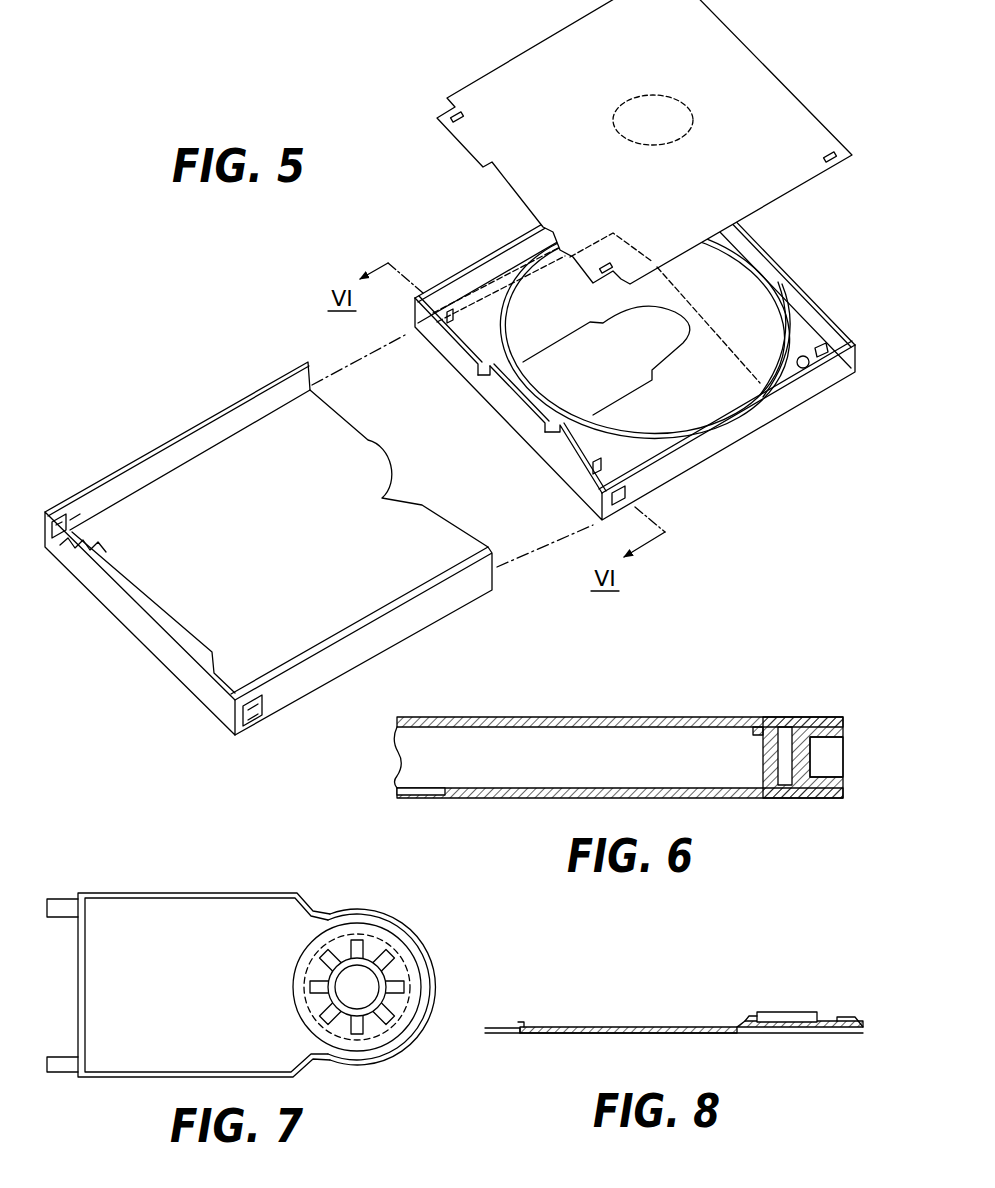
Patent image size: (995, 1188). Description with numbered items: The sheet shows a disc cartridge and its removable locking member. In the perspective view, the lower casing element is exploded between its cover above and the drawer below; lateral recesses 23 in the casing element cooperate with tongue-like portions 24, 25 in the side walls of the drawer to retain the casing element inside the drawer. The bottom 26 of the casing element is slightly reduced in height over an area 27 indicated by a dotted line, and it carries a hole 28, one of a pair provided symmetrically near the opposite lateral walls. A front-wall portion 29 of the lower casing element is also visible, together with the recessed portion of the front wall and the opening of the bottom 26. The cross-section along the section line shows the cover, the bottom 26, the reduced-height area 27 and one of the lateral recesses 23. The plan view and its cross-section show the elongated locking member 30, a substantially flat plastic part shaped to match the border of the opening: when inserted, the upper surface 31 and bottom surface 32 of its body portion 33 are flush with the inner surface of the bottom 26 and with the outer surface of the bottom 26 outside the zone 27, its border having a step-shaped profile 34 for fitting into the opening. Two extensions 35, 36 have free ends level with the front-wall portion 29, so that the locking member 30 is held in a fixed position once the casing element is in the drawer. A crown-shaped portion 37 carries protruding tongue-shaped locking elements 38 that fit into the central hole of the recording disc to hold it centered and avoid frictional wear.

In FIG. 5, the lateral recesses 23 is at (622, 496).
In FIG. 6, the lateral recesses 23 is at (823, 750).
In FIG. 5, the tongue-like portion 24 is at (248, 714).
In FIG. 5, the tongue-like portion 25 is at (60, 510).
In FIG. 5, the bottom 26 is at (767, 338).
In FIG. 6, the bottom 26 is at (506, 798).
In FIG. 5, the area of reduced height 27 is at (697, 357).
In FIG. 6, the area of reduced height 27 is at (748, 798).
In FIG. 5, the hole 28 is at (806, 368).
In FIG. 5, the front-wall portion 29 is at (453, 350).
In FIG. 7, the locking member 30 is at (255, 978).
In FIG. 8, the locking member 30 is at (674, 1025).
In FIG. 8, the upper surface 31 is at (627, 1025).
In FIG. 8, the bottom surface 32 is at (548, 1035).
In FIG. 7, the body portion 33 is at (218, 913).
In FIG. 8, the body portion 33 is at (672, 1025).
In FIG. 7, the step-shaped profile 34 is at (332, 907).
In FIG. 8, the step-shaped profile 34 is at (860, 1021).
In FIG. 7, the extension 35 is at (62, 903).
In FIG. 8, the extension 35 is at (503, 1025).
In FIG. 7, the extension 36 is at (60, 1068).
In FIG. 7, the crown-shaped portion 37 is at (368, 1020).
In FIG. 8, the crown-shaped portion 37 is at (788, 1012).
In FIG. 7, the tongue-shaped locking elements 38 is at (383, 955).
In FIG. 8, the tongue-shaped locking elements 38 is at (747, 1021).